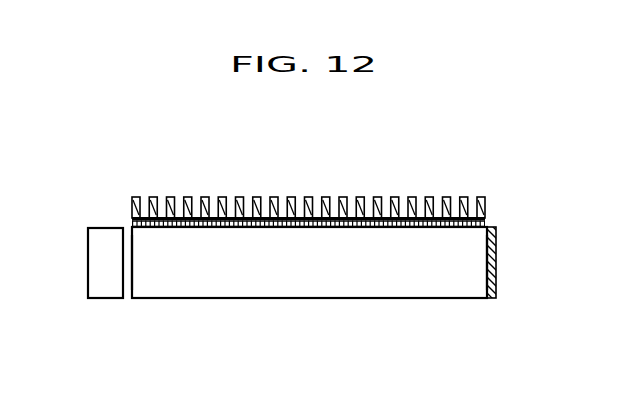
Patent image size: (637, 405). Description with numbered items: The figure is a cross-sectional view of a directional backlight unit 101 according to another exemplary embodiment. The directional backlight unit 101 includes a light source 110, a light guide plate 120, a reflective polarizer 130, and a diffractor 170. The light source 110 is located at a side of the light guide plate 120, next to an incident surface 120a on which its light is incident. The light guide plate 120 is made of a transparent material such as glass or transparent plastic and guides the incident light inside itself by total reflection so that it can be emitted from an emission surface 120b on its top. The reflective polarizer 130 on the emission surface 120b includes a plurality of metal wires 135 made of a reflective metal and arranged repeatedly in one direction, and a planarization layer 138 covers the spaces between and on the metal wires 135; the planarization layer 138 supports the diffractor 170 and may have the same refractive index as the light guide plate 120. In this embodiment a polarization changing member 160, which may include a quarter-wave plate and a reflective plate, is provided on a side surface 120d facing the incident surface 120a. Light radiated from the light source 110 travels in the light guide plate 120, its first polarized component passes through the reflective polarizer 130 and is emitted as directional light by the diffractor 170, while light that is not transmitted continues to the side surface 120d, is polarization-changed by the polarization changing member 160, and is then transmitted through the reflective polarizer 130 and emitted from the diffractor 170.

The directional backlight unit 101 is at (447, 149).
The light source 110 is at (105, 298).
The light guide plate 120 is at (357, 292).
The incident surface 120a is at (132, 259).
The emission surface 120b is at (423, 227).
The side surface 120d is at (490, 274).
The reflective polarizer 130 is at (118, 218).
The metal wires 135 is at (250, 227).
The planarization layer 138 is at (300, 227).
The polarization changing member 160 is at (490, 298).
The diffractor 170 is at (131, 218).